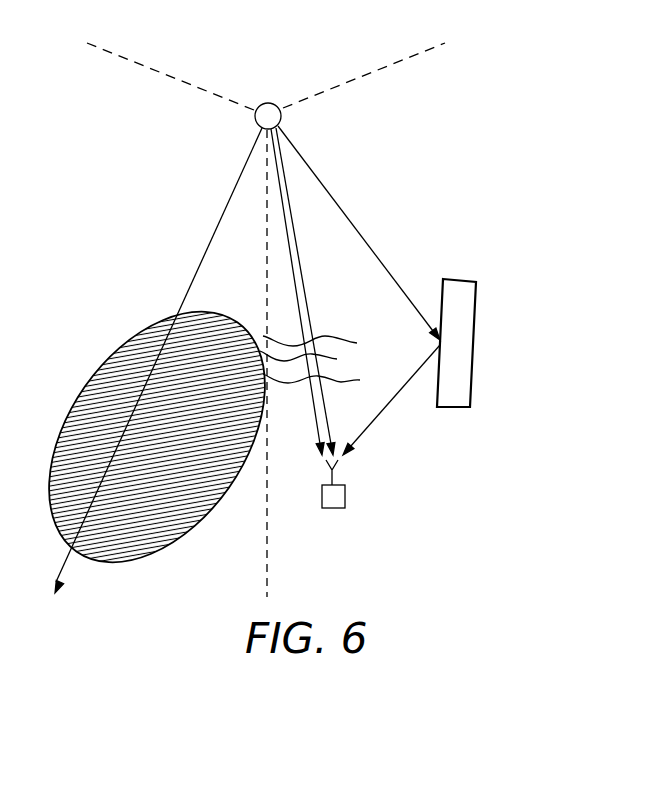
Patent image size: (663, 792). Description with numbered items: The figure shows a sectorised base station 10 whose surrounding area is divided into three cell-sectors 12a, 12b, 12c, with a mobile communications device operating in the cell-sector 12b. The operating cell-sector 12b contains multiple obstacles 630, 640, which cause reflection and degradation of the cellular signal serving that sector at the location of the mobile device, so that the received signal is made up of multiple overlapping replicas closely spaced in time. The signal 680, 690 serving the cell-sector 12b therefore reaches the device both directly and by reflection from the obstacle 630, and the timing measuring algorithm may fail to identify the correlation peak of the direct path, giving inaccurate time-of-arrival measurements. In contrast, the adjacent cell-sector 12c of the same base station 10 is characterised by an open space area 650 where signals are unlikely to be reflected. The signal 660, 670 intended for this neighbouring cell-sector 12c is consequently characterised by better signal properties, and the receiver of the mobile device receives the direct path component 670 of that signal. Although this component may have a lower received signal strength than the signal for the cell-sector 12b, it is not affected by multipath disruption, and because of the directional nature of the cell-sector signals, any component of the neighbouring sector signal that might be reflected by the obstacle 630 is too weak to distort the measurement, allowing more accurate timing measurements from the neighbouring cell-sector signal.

The base station 10 is at (271, 103).
The cell-sector 12a is at (317, 67).
The operating cell-sector 12b is at (343, 346).
The neighbouring cell-sector 12c is at (170, 81).
The obstacle 630 is at (478, 292).
The obstacle 640 is at (338, 332).
The open space area 650 is at (150, 328).
The signal 660 is at (227, 210).
The direct path component 670 is at (315, 420).
The signal 680 is at (300, 258).
The signal 690 is at (331, 201).